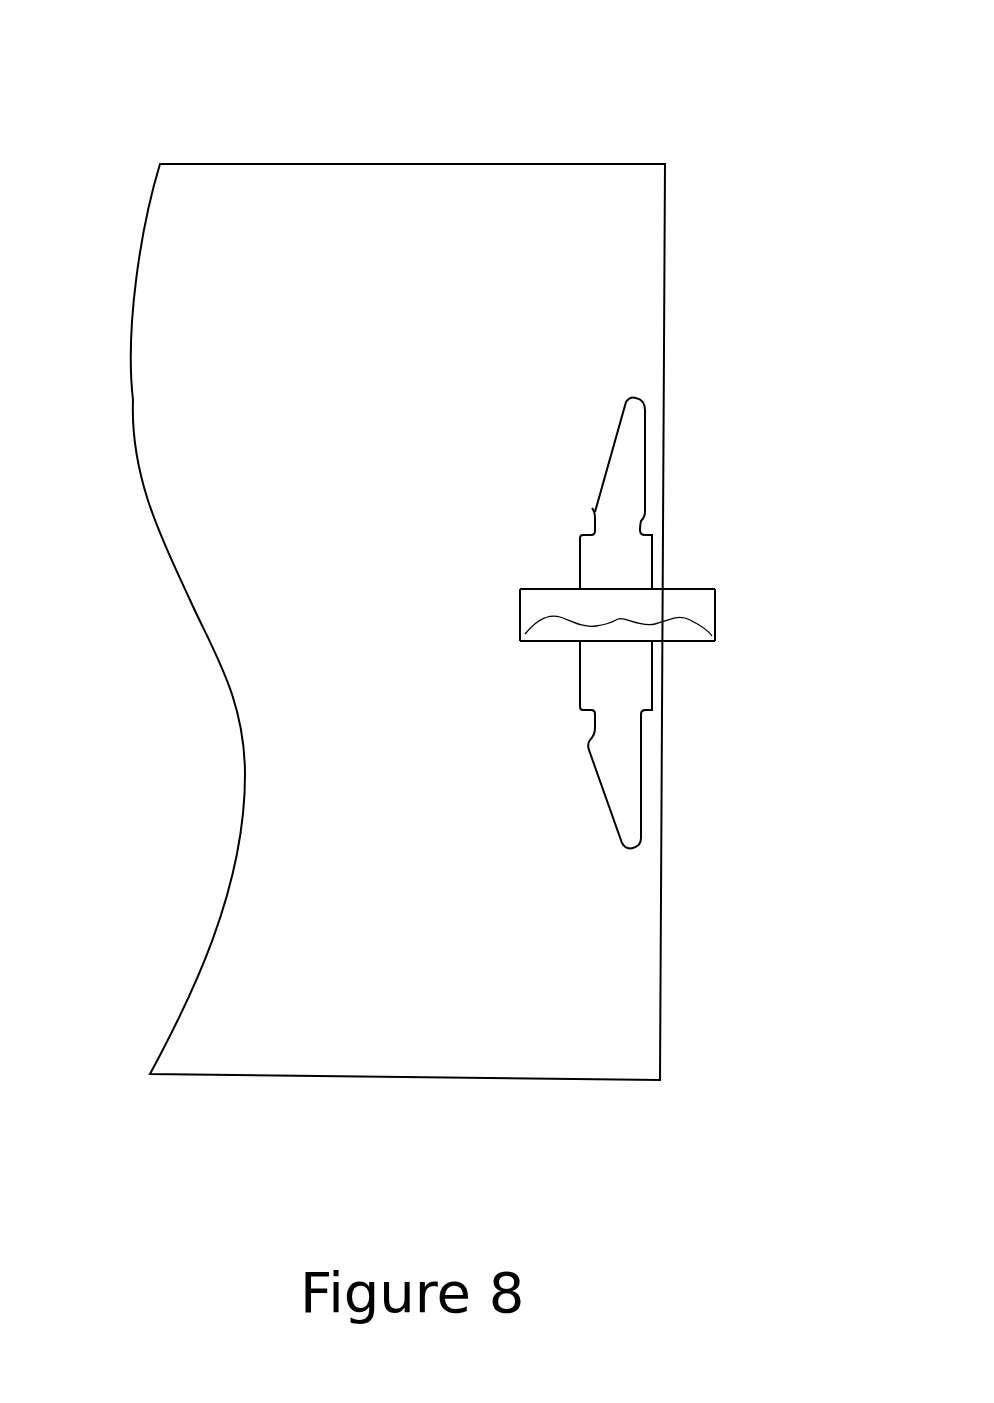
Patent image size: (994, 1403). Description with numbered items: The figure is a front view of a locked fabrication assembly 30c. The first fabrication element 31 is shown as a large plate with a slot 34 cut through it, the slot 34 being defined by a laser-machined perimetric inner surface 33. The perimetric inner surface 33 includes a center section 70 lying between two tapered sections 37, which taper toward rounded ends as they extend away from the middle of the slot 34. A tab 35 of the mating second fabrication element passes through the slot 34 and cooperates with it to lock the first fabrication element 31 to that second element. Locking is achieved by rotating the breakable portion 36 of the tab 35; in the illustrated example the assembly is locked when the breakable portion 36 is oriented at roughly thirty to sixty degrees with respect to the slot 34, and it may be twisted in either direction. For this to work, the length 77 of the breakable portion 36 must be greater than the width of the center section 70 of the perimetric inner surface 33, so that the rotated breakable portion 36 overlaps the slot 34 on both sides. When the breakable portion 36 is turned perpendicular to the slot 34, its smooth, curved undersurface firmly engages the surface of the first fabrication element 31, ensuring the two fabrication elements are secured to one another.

The locked fabrication assembly 30c is at (638, 131).
The first fabrication element 31 is at (503, 988).
The perimetric inner surface 33 is at (643, 418).
The slot 34 is at (640, 525).
The tab 35 is at (520, 605).
The breakable portion 36 is at (716, 612).
The length of the breakable portion 77 is at (617, 615).
The center section 70 is at (651, 690).
The tapered sections 37 is at (642, 745).